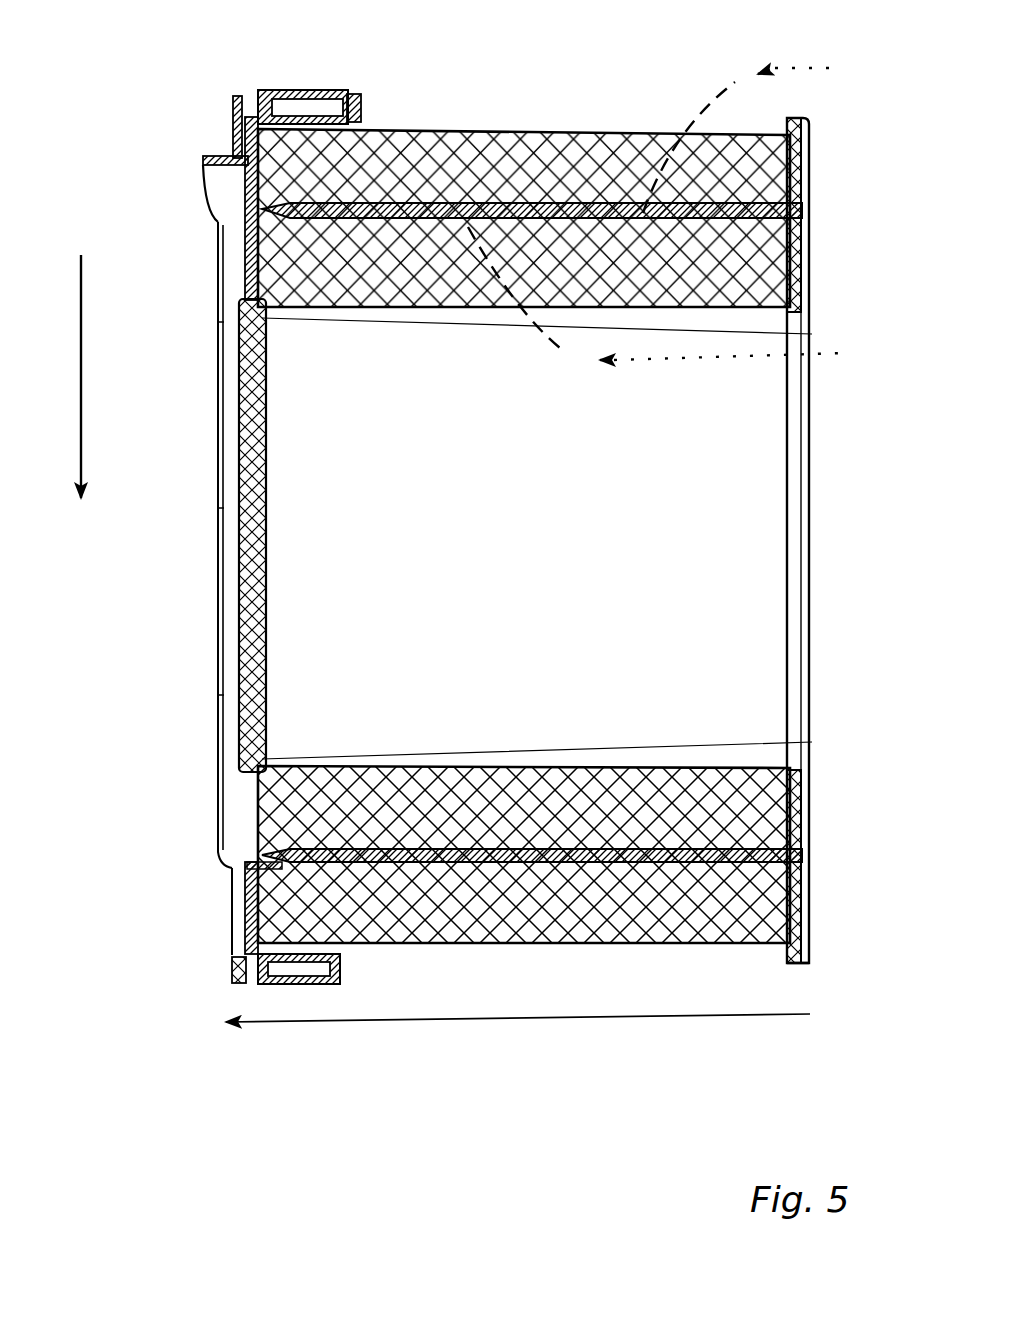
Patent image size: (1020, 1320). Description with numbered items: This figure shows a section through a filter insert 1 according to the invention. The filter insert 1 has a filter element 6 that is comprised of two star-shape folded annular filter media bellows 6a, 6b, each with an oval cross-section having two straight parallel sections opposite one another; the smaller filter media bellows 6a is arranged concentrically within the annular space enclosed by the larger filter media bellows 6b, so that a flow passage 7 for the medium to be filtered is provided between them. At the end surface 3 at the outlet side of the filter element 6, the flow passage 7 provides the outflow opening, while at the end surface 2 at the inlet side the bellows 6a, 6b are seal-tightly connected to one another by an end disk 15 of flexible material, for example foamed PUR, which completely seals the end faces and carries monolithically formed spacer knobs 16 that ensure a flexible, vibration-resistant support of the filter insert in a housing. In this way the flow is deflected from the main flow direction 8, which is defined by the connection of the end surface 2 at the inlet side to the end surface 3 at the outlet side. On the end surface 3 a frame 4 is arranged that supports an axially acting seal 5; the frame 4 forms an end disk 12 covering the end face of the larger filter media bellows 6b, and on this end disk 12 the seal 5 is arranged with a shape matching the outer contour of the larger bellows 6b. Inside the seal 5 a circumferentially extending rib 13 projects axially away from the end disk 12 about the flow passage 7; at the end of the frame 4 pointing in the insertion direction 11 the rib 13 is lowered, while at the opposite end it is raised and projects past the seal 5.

The filter insert 1 is at (104, 92).
The end surface at the inlet side 2 is at (810, 186).
The end surface at the outlet side 3 is at (256, 276).
The frame 4 is at (314, 92).
The axially acting seal 5 is at (236, 100).
The filter element 6 is at (556, 242).
The smaller filter media bellows 6a is at (437, 802).
The larger filter media bellows 6b is at (522, 887).
The flow passage 7 is at (292, 211).
The main flow direction 8 is at (518, 1003).
The insertion direction 11 is at (66, 376).
The end disk 12 is at (242, 913).
The circumferentially extending rib 13 is at (203, 162).
The end disk of flexible material 15 is at (796, 896).
The spacer knobs 16 is at (805, 961).